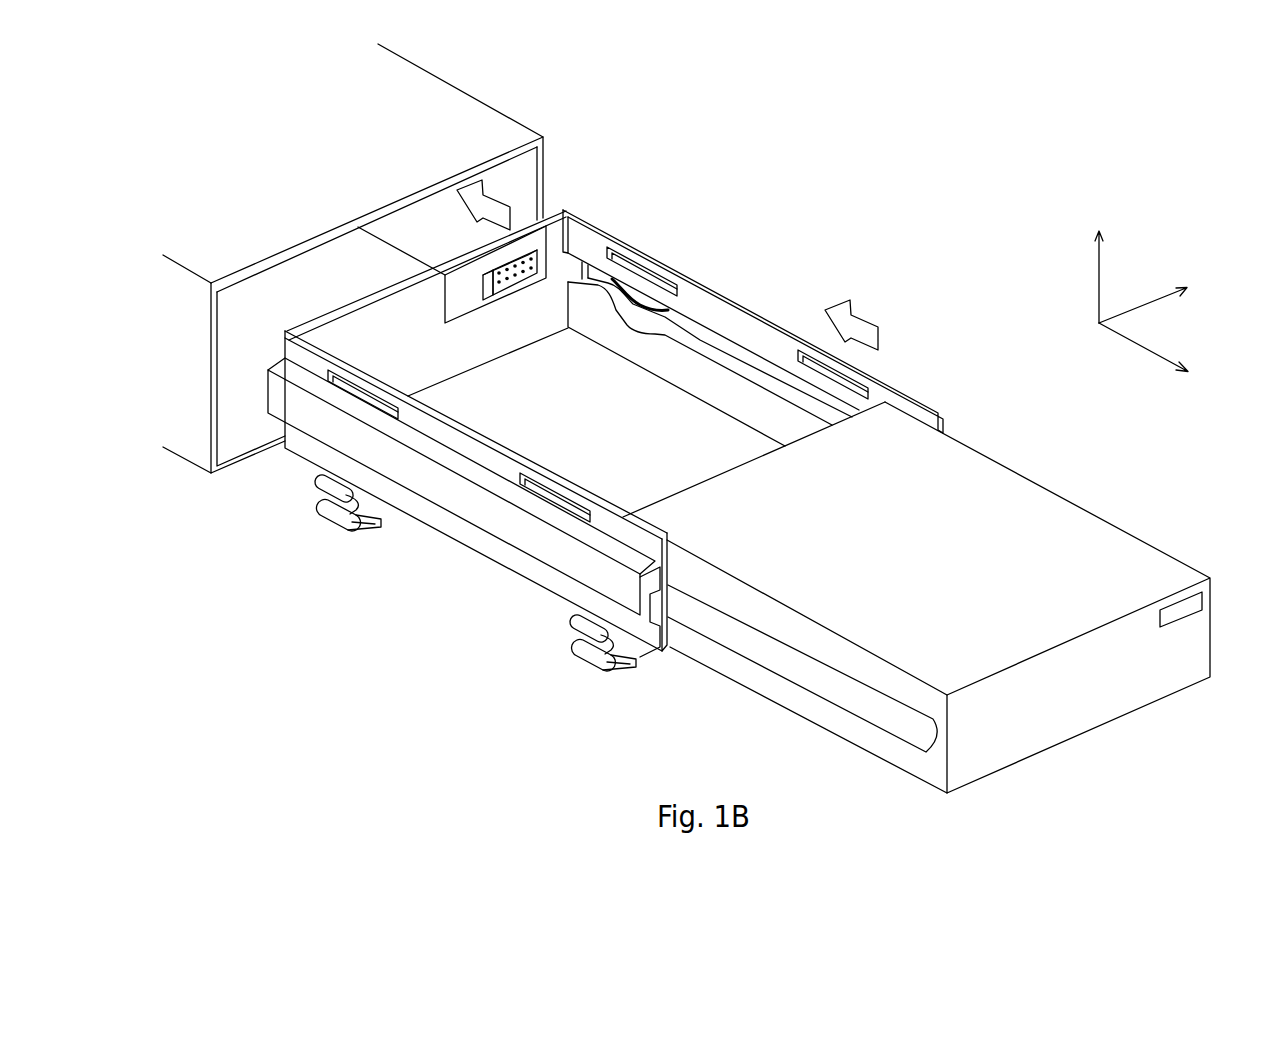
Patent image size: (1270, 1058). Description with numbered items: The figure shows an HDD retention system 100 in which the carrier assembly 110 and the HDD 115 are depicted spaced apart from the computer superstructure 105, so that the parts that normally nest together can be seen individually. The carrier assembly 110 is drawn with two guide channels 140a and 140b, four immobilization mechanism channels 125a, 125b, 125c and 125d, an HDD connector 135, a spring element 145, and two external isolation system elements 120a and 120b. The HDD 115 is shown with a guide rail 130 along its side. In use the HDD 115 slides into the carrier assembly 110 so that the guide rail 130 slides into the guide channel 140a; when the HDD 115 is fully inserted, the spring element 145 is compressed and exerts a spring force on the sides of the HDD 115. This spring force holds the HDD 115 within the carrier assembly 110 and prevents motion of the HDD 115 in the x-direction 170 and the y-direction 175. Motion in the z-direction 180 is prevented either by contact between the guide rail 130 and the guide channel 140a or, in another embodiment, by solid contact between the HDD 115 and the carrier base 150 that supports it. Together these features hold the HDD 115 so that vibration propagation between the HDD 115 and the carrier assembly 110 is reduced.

The HDD retention system 100 is at (1055, 117).
The computer superstructure 105 is at (547, 137).
The carrier assembly 110 is at (672, 455).
The HDD 115 is at (967, 460).
The external isolation system element 120a is at (328, 518).
The external isolation system element 120b is at (587, 657).
The immobilization mechanism channel 125a is at (358, 397).
The immobilization mechanism channel 125b is at (553, 497).
The immobilization mechanism channel 125c is at (675, 288).
The immobilization mechanism channel 125d is at (868, 385).
The guide rail 130 is at (810, 678).
The HDD connector 135 is at (537, 257).
The guide channel 140a is at (445, 507).
The guide channel 140b is at (630, 294).
The spring element 145 is at (650, 310).
The carrier base 150 is at (735, 333).
The x-direction 170 is at (1155, 357).
The y-direction 175 is at (1143, 300).
The z-direction 180 is at (1099, 273).